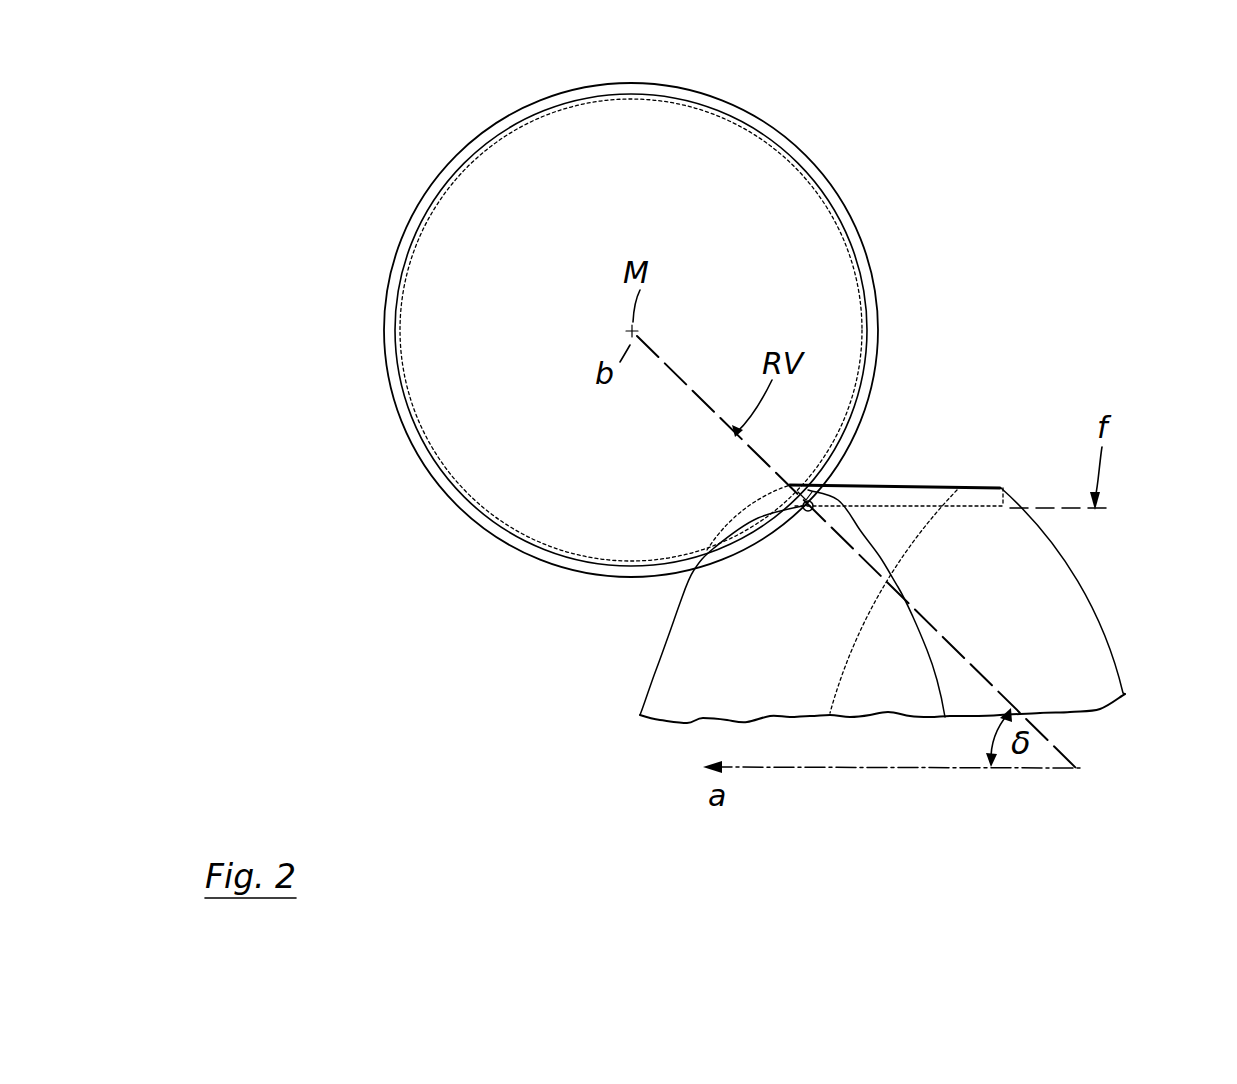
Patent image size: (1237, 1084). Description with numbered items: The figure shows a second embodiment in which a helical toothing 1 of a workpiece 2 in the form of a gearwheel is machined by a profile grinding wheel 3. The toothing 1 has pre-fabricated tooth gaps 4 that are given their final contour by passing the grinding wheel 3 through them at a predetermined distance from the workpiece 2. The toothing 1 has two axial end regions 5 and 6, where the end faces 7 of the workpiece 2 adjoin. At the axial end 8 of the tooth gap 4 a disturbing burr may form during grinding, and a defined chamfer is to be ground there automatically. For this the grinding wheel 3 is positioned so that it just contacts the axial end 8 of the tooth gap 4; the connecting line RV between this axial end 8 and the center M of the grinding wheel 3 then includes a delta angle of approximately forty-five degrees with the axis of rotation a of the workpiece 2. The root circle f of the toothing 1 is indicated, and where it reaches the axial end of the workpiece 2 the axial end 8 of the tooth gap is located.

The toothing 1 is at (1033, 612).
The workpiece 2 is at (1090, 673).
The profile grinding wheel 3 is at (473, 197).
The tooth gap 4 is at (920, 497).
The axial end region 5 is at (808, 538).
The axial end region 6 is at (1002, 471).
The end face 7 is at (700, 633).
The axial end of the tooth gap 8 is at (807, 500).